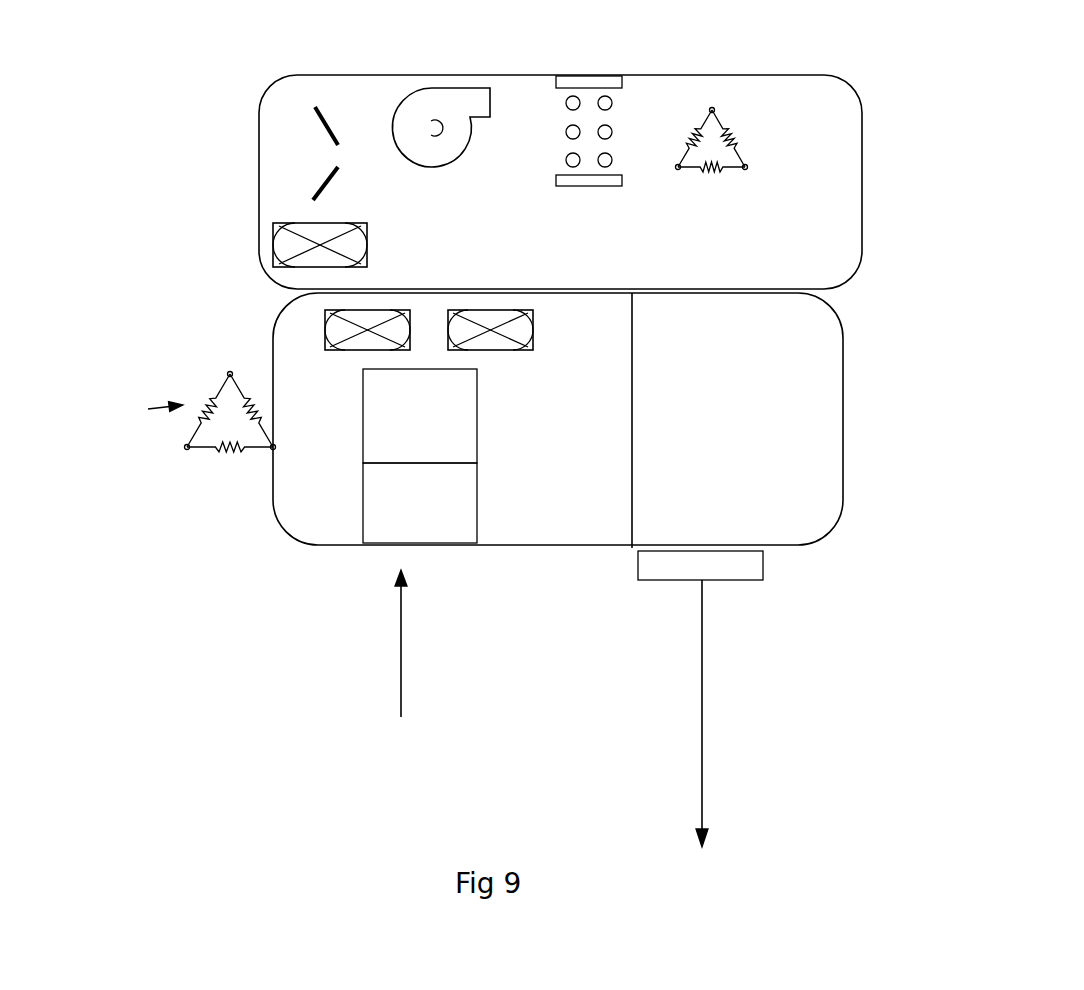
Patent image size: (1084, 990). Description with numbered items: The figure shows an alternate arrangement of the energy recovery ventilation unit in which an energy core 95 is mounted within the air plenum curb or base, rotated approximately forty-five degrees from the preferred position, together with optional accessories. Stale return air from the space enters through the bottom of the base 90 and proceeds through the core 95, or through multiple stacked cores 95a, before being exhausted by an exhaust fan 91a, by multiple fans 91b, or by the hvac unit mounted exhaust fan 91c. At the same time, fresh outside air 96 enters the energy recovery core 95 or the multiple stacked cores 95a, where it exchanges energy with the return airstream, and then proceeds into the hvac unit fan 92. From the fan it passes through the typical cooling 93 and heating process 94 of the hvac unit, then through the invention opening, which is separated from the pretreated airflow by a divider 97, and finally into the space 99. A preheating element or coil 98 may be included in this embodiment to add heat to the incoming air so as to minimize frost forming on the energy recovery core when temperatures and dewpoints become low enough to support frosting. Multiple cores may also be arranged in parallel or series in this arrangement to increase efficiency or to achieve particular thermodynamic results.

The bottom of the base 90 is at (402, 668).
The exhaust fan 91a is at (436, 329).
The multiple fans 91b is at (314, 328).
The hvac unit mounted exhaust fan 91c is at (262, 238).
The hvac unit fan 92 is at (560, 182).
The cooling 93 is at (589, 99).
The heating process 94 is at (712, 92).
The energy core 95 is at (420, 503).
The multiple stacked cores 95a is at (420, 416).
The fresh outside air 96 is at (158, 422).
The divider 97 is at (619, 432).
The preheating element or coil 98 is at (230, 412).
The space 99 is at (705, 699).